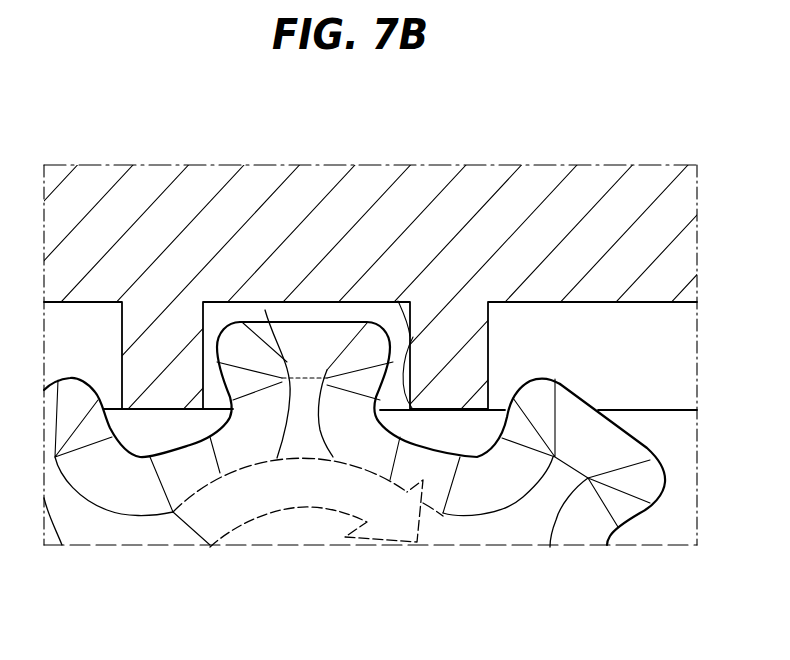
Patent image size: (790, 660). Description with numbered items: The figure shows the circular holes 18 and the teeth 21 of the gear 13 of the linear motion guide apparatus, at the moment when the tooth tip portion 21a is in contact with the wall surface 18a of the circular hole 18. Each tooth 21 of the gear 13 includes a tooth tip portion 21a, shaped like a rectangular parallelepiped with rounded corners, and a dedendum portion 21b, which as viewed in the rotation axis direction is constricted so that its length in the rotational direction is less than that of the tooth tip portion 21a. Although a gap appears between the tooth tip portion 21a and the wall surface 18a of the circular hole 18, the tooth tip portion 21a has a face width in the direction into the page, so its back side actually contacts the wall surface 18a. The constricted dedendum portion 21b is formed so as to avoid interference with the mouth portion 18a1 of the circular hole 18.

The gear 13 is at (305, 545).
The circular hole 18 is at (343, 300).
The wall surface 18a is at (408, 297).
The mouth portion 18a1 is at (413, 337).
The tooth 21 is at (338, 102).
The tooth tip portion 21a is at (265, 310).
The dedendum portion 21b is at (313, 437).